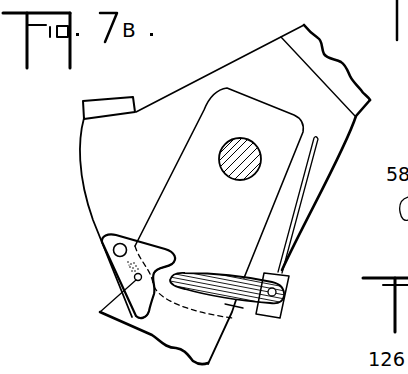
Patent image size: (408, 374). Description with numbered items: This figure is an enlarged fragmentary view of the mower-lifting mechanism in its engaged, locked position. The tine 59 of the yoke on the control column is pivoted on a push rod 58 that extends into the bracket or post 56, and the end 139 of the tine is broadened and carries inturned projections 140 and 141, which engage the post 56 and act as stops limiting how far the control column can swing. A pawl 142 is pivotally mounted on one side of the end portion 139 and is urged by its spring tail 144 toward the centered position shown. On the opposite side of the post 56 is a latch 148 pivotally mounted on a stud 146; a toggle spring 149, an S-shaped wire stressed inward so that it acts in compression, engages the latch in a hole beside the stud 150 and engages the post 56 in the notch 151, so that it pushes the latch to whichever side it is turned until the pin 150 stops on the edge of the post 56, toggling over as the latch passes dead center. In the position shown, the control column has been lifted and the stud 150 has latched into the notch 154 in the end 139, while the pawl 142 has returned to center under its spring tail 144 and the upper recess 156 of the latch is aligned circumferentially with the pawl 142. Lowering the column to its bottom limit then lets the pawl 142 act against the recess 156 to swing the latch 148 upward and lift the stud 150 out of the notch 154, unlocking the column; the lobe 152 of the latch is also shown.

The end of tine 139 is at (84, 145).
The inturned projection 141 is at (120, 104).
The tine 59 is at (302, 40).
The post 56 is at (178, 171).
The push rod 58 is at (237, 146).
The spring tail 144 is at (288, 250).
The inturned projection 140 is at (281, 317).
The pawl 142 is at (240, 302).
The latch 148 is at (148, 250).
The notch 154 is at (128, 231).
The upper recess 156 is at (172, 266).
The lobe 152 is at (146, 313).
The stud 150 is at (113, 249).
The notch 151 is at (130, 278).
The toggle spring 149 is at (123, 263).
The stud 146 is at (104, 310).